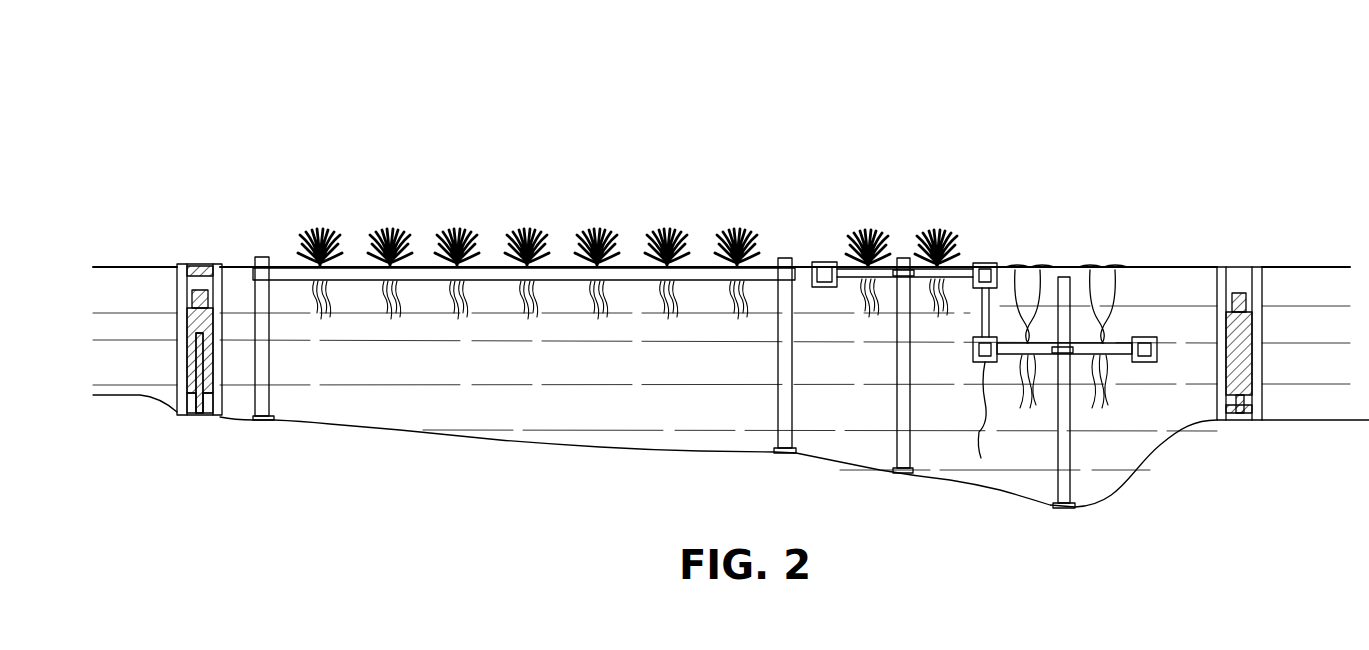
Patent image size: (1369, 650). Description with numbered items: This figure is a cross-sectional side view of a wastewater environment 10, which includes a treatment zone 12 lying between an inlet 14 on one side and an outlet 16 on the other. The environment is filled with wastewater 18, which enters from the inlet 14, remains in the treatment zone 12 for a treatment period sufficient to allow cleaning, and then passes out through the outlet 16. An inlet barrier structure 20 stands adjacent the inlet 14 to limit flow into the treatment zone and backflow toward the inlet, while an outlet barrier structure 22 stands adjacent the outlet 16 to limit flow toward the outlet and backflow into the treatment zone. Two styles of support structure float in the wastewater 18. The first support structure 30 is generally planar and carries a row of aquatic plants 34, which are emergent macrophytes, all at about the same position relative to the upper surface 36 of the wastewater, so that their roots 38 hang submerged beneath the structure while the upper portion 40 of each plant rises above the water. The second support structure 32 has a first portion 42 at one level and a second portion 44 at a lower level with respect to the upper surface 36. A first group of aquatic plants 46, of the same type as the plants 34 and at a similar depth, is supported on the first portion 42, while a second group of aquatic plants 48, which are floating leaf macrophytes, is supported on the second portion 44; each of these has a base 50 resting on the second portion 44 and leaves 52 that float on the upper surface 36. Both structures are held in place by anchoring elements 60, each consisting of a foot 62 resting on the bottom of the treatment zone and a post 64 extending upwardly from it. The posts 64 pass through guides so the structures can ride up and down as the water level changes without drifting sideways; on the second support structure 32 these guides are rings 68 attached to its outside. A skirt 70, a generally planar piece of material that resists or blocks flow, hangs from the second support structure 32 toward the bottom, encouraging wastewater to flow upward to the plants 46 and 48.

The wastewater environment 10 is at (750, 103).
The treatment zone 12 is at (744, 203).
The inlet 14 is at (147, 248).
The outlet 16 is at (1320, 252).
The wastewater 18 is at (662, 374).
The inlet barrier structure 20 is at (205, 264).
The outlet barrier structure 22 is at (1243, 267).
The first support structure 30 is at (701, 262).
The second support structure 32 is at (985, 258).
The aquatic plants 34 is at (535, 230).
The upper surface 36 is at (1178, 266).
The roots 38 is at (535, 298).
The upper portion 40 is at (528, 238).
The first portion 42 is at (826, 288).
The second portion 44 is at (1157, 350).
The first group of aquatic plants 46 is at (862, 223).
The second group of aquatic plants 48 is at (1118, 290).
The base 50 is at (1105, 342).
The leaves 52 is at (1045, 264).
The anchoring elements 60 is at (271, 358).
The foot 62 is at (273, 416).
The post 64 is at (266, 326).
The rings 68 is at (1083, 419).
The skirt 70 is at (980, 420).